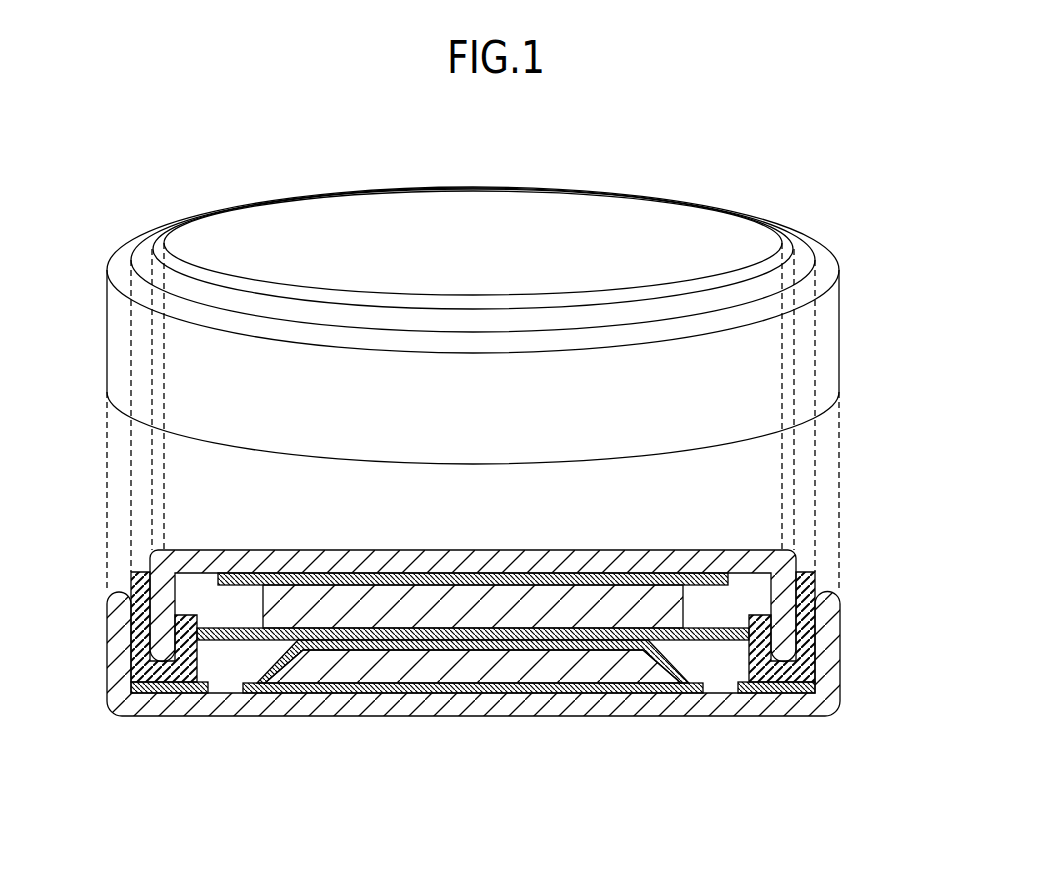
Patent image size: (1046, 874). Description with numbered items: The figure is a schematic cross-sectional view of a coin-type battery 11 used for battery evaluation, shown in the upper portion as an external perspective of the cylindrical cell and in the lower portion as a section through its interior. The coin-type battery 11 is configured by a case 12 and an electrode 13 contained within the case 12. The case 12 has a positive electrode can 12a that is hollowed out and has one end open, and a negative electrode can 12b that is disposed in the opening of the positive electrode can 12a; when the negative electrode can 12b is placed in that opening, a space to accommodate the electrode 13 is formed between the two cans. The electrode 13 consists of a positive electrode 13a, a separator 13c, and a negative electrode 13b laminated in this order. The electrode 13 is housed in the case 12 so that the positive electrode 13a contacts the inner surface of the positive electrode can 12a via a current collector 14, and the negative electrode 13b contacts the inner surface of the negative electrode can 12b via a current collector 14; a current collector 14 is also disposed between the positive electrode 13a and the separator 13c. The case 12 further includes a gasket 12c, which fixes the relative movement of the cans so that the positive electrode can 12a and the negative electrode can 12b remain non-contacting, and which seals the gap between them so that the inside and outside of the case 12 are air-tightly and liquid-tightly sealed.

The coin-type battery 11 is at (160, 130).
The case 12 is at (910, 496).
The positive electrode can 12a is at (825, 351).
The negative electrode can 12b is at (723, 224).
The gasket 12c is at (146, 255).
The electrode 13 is at (602, 787).
The positive electrode 13a is at (476, 668).
The negative electrode 13b is at (575, 608).
The separator 13c is at (528, 632).
The current collector 14 is at (236, 578).